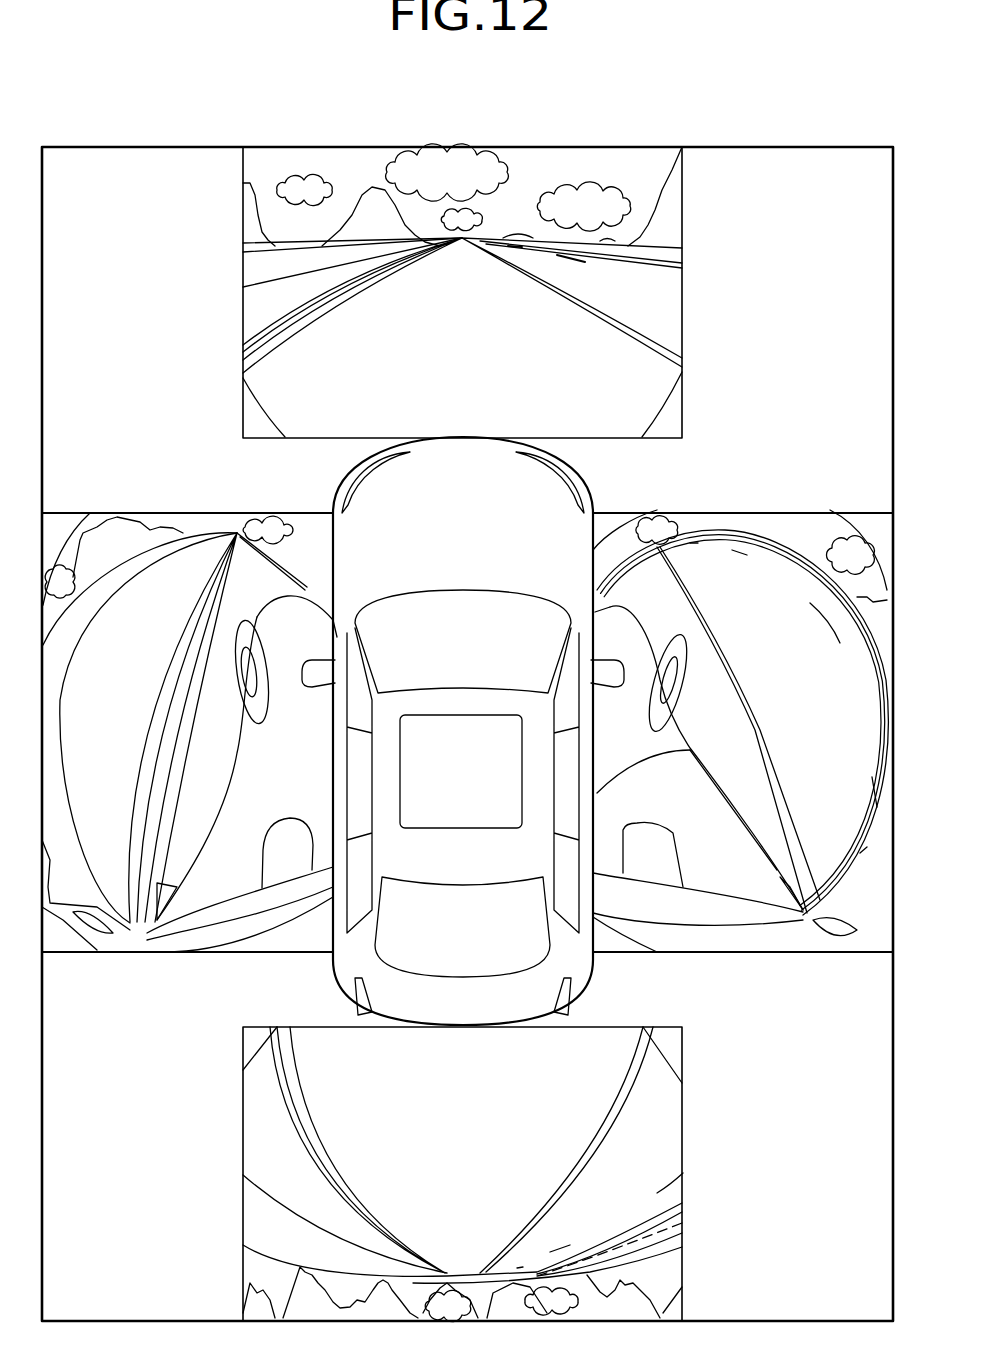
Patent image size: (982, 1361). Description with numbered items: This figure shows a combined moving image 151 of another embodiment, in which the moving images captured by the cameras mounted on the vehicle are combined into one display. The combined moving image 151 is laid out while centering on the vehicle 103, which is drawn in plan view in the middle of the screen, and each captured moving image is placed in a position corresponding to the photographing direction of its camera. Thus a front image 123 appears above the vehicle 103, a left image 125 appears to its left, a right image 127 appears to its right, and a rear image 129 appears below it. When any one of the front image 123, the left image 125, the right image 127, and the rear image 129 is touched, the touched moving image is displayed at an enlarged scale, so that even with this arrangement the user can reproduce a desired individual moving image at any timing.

The combined moving image 151 is at (770, 146).
The front image 123 is at (243, 311).
The left image 125 is at (187, 520).
The right image 127 is at (803, 520).
The rear image 129 is at (243, 1152).
The vehicle 103 is at (523, 502).